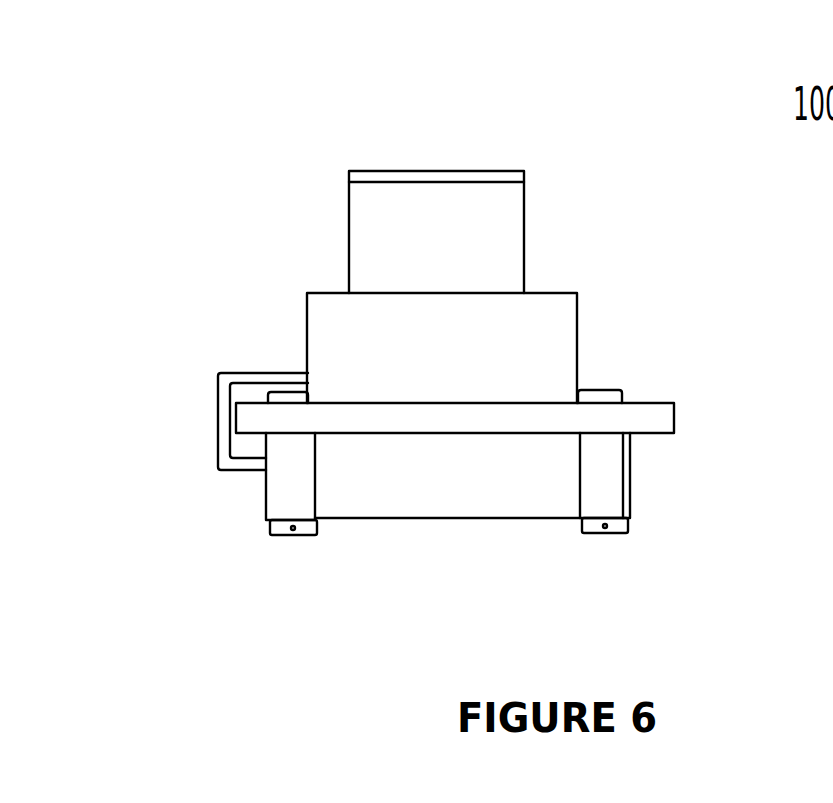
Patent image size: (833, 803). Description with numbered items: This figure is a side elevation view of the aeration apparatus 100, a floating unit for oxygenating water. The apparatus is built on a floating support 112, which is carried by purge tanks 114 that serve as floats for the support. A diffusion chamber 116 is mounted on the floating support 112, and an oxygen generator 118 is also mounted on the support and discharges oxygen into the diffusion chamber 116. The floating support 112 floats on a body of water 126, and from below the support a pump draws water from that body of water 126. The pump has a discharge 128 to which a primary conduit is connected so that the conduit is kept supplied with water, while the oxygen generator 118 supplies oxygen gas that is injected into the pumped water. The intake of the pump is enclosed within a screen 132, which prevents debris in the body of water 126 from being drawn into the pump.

The aeration apparatus 100 is at (245, 202).
The floating support 112 is at (610, 480).
The purge tanks 114 is at (660, 419).
The diffusion chamber 116 is at (577, 355).
The oxygen generator 118 is at (524, 238).
The body of water 126 is at (218, 435).
The discharge 128 is at (218, 418).
The screen 132 is at (468, 518).